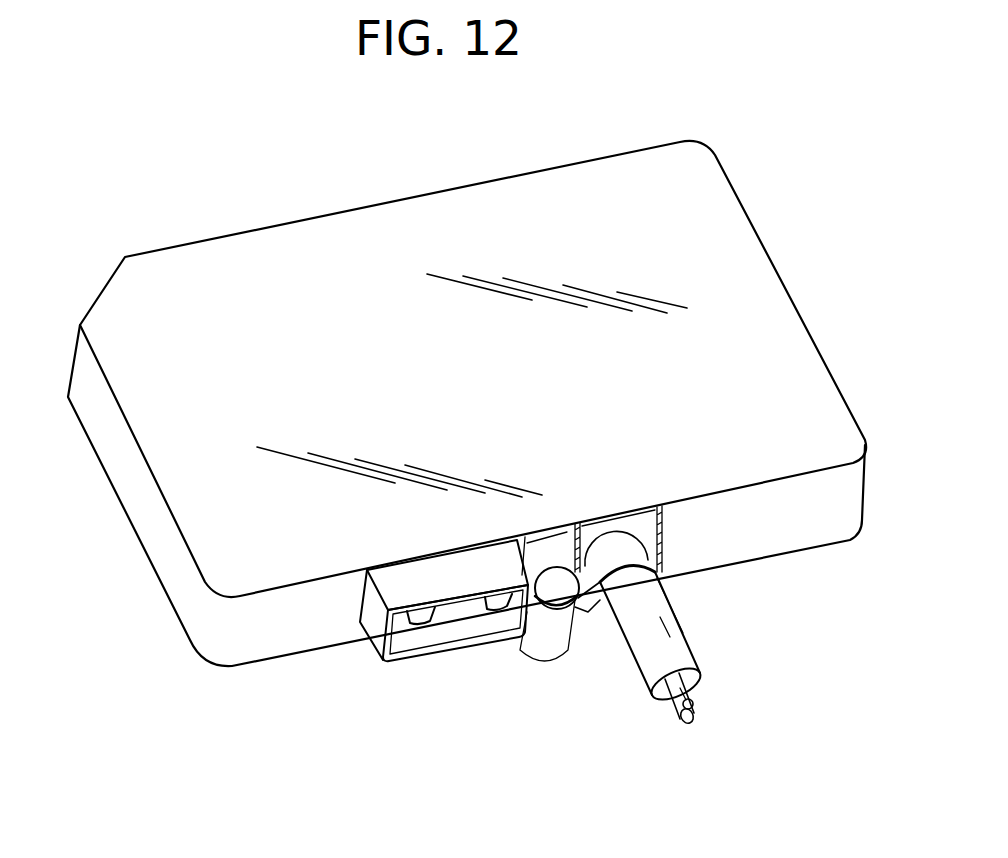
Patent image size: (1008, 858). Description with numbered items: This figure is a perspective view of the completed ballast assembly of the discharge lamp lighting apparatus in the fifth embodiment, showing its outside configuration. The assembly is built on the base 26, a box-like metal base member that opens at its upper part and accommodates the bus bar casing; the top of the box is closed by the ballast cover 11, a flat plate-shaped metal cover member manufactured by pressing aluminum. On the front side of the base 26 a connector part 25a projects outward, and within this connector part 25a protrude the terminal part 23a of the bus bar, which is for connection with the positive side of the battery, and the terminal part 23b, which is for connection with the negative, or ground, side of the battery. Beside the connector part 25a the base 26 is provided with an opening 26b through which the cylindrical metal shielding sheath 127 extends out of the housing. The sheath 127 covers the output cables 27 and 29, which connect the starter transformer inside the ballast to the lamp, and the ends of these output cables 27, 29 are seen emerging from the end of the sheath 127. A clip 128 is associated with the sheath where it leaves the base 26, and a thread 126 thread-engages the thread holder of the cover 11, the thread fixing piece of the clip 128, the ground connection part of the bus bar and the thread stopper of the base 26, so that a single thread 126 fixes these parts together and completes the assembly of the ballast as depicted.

The ballast cover 11 is at (770, 293).
The base 26 is at (838, 500).
The connector part 25a is at (397, 593).
The terminal part 23a is at (415, 625).
The terminal part 23b is at (488, 617).
The opening 26b is at (550, 663).
The thread 126 is at (585, 612).
The clip 128 is at (618, 552).
The cylindrical metal shielding sheath 127 is at (670, 642).
The output cable 27 is at (677, 700).
The output cable 29 is at (685, 717).